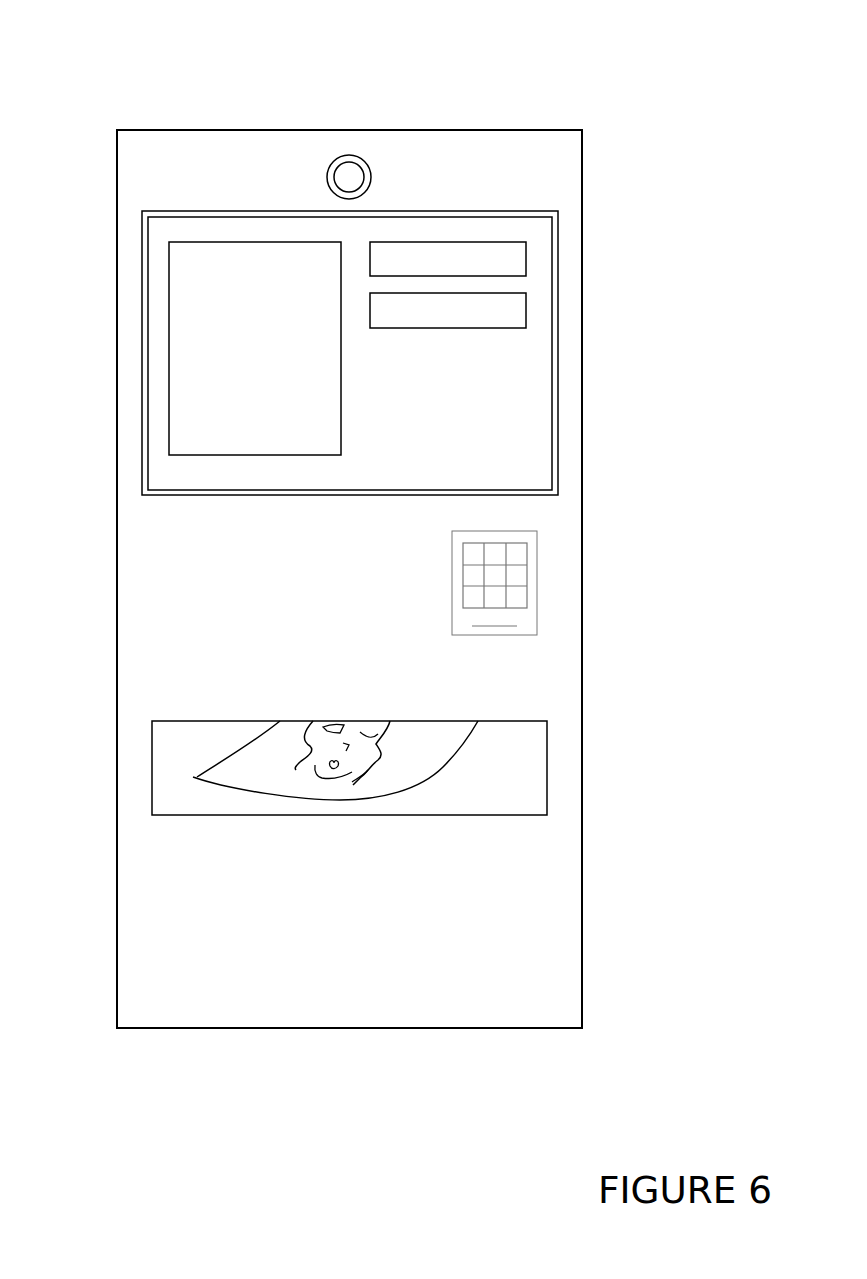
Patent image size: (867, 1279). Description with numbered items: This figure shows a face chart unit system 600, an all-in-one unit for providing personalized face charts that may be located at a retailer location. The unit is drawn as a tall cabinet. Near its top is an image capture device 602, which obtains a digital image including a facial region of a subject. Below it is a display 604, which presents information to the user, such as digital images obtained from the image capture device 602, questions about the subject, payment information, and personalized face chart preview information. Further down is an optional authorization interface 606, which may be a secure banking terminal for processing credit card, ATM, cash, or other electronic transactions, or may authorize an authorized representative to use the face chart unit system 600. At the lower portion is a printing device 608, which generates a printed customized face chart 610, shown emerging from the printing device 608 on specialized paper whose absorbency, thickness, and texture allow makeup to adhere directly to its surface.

The face chart unit system 600 is at (632, 104).
The image capture device 602 is at (330, 163).
The display 604 is at (493, 447).
The authorization interface 606 is at (513, 601).
The printing device 608 is at (512, 789).
The printed customized face chart 610 is at (195, 778).